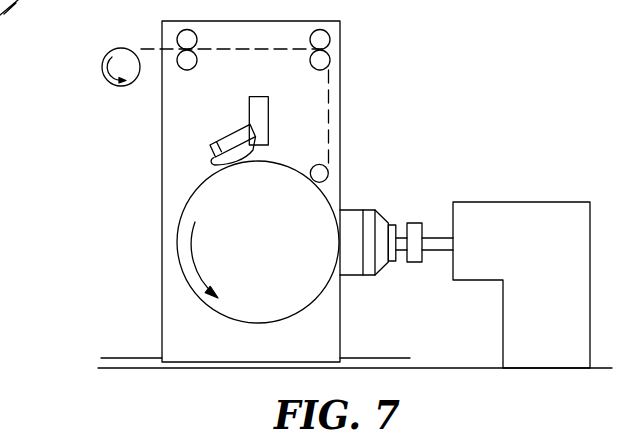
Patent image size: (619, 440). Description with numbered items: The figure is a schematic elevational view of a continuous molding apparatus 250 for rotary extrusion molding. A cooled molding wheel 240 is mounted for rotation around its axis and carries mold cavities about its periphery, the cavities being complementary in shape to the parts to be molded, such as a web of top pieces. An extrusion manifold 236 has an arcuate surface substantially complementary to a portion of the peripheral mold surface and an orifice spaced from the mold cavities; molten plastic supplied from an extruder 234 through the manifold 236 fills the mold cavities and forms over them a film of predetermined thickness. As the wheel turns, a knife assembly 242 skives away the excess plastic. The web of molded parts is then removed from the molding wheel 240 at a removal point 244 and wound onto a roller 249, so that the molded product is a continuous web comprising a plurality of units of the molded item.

The extruder 234 is at (552, 256).
The extrusion manifold 236 is at (366, 210).
The cooled molding wheel 240 is at (273, 252).
The knife assembly 242 is at (249, 108).
The web removal point 244 is at (314, 165).
The roller 249 is at (132, 72).
The molding apparatus 250 is at (162, 200).